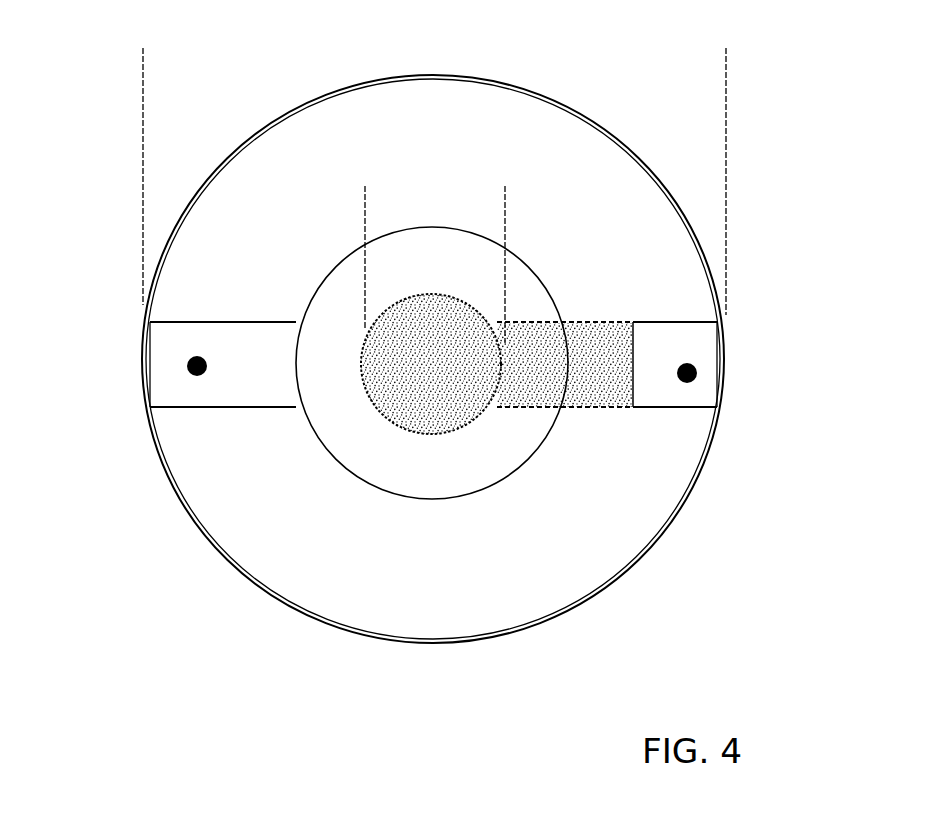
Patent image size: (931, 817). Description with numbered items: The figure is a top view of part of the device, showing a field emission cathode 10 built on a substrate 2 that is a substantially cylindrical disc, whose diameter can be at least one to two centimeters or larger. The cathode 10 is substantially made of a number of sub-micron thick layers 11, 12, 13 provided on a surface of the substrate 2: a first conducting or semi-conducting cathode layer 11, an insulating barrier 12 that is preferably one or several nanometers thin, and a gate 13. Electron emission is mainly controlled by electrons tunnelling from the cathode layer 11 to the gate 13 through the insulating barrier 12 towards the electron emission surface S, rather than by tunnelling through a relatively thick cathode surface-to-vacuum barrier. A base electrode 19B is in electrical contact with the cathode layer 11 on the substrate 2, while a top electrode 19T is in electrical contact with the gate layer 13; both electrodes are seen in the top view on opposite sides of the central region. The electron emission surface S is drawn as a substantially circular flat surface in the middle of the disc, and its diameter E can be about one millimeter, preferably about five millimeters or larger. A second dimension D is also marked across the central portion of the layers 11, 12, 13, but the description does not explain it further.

The substrate 2 is at (652, 462).
The field emission cathode 10 is at (123, 473).
The cathode layer 11 is at (351, 447).
The insulating barrier 12 is at (432, 363).
The gate 13 is at (358, 427).
The electron emission surface S is at (430, 407).
The top electrode 19T is at (187, 366).
The base electrode 19B is at (697, 373).
The diameter of the electron emission surface E is at (726, 57).
The inner diameter dimension D is at (505, 193).